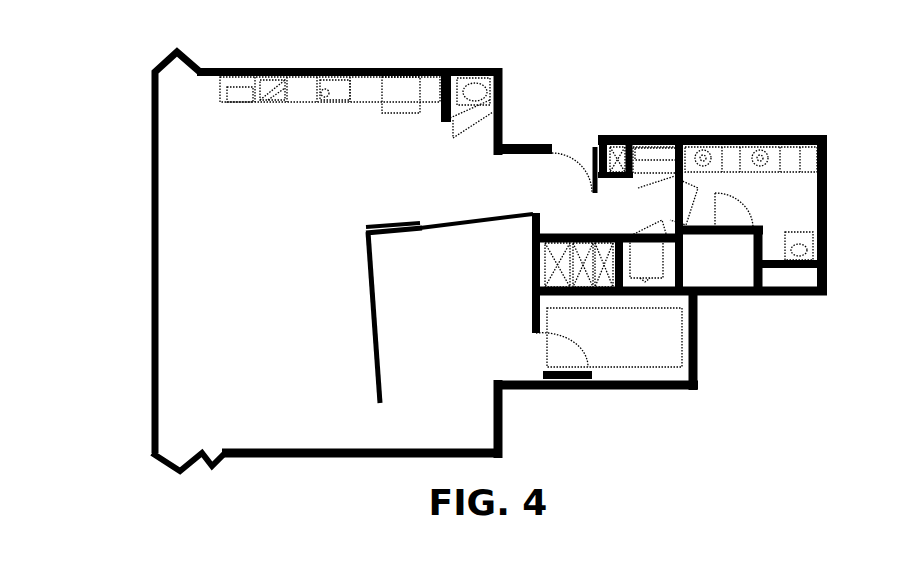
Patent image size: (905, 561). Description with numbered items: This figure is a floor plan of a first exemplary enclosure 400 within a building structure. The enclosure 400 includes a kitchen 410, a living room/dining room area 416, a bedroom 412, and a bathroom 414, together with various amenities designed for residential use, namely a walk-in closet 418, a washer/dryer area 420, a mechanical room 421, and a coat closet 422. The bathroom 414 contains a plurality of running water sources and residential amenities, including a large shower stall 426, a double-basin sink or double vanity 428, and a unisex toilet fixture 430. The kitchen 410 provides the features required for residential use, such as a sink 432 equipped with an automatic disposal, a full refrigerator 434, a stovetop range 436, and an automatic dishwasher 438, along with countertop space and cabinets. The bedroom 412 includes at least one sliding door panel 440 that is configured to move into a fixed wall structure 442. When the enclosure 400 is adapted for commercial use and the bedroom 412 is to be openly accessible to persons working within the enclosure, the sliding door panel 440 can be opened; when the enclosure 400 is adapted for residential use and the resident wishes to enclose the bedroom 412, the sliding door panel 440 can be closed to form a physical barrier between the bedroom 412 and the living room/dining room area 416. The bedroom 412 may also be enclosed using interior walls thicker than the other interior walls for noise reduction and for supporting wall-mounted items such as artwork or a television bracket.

The enclosure 400 is at (92, 44).
The kitchen 410 is at (220, 110).
The bedroom 412 is at (425, 333).
The bathroom 414 is at (731, 200).
The living room/dining room area 416 is at (353, 252).
The walk-in closet 418 is at (620, 339).
The washer/dryer area 420 is at (650, 253).
The mechanical room 421 is at (478, 90).
The coat closet 422 is at (643, 162).
The large shower stall 426 is at (719, 260).
The double-basin sink 428 is at (770, 158).
The unisex toilet fixture 430 is at (792, 255).
The sink 432 is at (277, 92).
The full refrigerator 434 is at (397, 90).
The stovetop range 436 is at (332, 92).
The automatic dishwasher 438 is at (231, 87).
The sliding door panel 440 is at (478, 227).
The fixed wall structure 442 is at (404, 231).